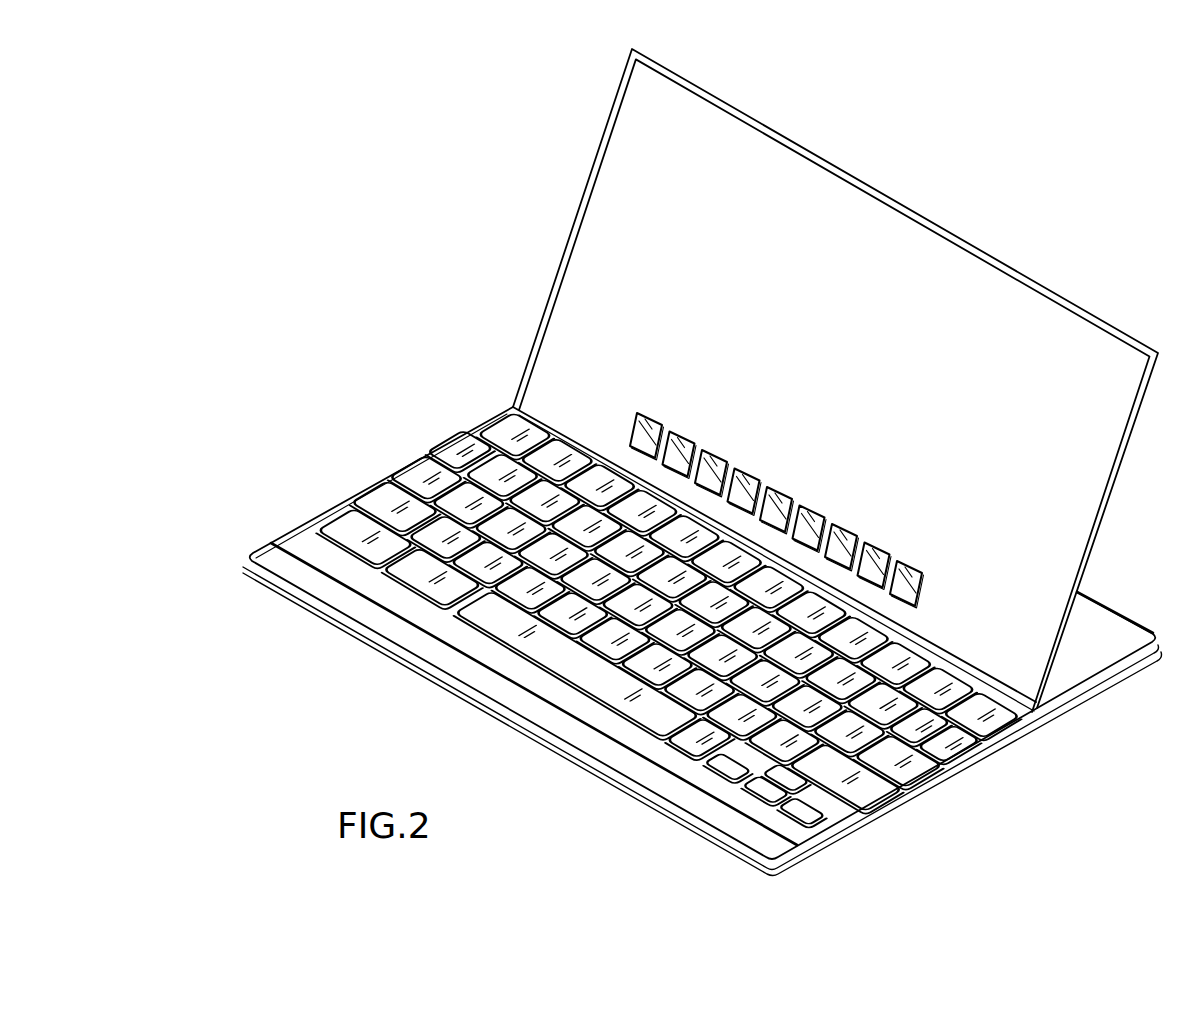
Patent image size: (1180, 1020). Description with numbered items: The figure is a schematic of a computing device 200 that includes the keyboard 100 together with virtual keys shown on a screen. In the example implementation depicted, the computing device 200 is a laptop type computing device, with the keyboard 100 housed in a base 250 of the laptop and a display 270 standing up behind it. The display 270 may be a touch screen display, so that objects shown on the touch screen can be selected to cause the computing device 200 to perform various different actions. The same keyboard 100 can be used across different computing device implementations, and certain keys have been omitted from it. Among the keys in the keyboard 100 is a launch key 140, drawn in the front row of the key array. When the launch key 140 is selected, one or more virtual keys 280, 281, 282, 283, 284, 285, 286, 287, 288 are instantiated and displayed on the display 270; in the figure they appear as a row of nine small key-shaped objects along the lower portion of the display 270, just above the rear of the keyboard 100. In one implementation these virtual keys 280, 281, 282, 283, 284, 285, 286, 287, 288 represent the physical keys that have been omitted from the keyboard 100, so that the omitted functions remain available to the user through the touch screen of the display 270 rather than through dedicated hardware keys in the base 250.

The keyboard 100 is at (394, 460).
The launch key 140 is at (675, 735).
The computing device 200 is at (841, 84).
The base 250 is at (302, 542).
The display 270 is at (585, 289).
The virtual key 280 is at (649, 418).
The virtual key 281 is at (682, 436).
The virtual key 282 is at (714, 455).
The virtual key 283 is at (747, 473).
The virtual key 284 is at (779, 492).
The virtual key 285 is at (812, 510).
The virtual key 286 is at (844, 529).
The virtual key 287 is at (877, 547).
The virtual key 288 is at (909, 566).